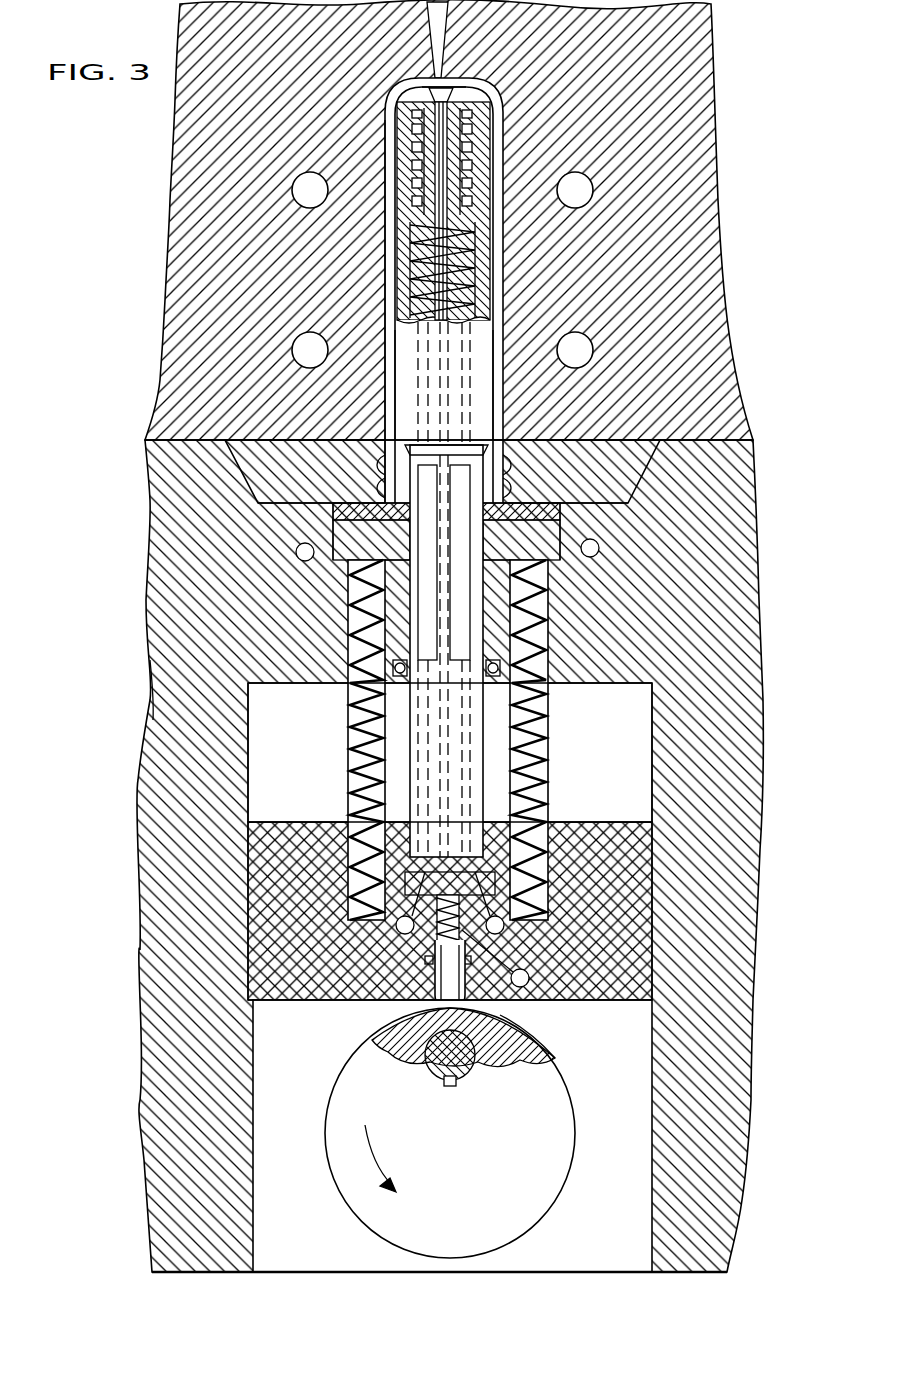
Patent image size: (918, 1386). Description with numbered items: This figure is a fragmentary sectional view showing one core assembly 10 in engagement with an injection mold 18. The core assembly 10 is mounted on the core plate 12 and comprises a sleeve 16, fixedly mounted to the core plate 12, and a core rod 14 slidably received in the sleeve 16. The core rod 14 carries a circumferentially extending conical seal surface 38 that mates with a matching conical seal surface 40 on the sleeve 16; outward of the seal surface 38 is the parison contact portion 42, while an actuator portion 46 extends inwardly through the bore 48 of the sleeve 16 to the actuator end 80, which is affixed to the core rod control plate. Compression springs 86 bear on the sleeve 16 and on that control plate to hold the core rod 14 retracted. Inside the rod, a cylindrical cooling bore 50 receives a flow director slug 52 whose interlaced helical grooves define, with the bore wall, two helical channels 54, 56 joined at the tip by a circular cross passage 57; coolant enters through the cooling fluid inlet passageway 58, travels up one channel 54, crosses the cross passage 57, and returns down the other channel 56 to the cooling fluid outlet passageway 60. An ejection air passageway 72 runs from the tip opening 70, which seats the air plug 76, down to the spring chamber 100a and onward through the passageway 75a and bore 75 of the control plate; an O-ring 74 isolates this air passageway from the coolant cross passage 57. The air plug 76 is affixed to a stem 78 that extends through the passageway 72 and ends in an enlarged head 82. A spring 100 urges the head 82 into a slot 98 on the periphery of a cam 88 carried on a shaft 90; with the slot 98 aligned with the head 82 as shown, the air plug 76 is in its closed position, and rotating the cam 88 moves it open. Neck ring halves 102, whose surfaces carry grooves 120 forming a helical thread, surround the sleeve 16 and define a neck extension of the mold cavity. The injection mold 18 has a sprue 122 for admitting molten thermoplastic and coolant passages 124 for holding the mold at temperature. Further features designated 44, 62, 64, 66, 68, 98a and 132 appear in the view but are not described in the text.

The core assembly 10 is at (180, 604).
The core plate 12 is at (145, 692).
The core rod 14 is at (392, 377).
The sleeve 16 is at (330, 470).
The injection mold 18 is at (182, 357).
The conical seal surface 38 is at (400, 395).
The conical seal surface 40 is at (385, 430).
The parison contact portion 42 is at (400, 330).
The nozzle cap 44 is at (416, 68).
The actuator portion 46 is at (392, 745).
The bore 48 is at (405, 547).
The cooling bore 50 is at (472, 240).
The flow director slug 52 is at (470, 134).
The helical channel 54 is at (474, 222).
The helical channel 56 is at (383, 145).
The cross passage 57 is at (397, 112).
The cooling fluid inlet passageway 58 is at (504, 926).
The cooling fluid outlet passageway 60 is at (397, 922).
The seal 62 is at (483, 492).
The passage 64 is at (312, 560).
The flange edge 66 is at (333, 512).
The guide sleeve 68 is at (494, 447).
The tip opening 70 is at (455, 90).
The ejection air passageway 72 is at (472, 166).
The O-ring 74 is at (449, 108).
The bore 75 is at (530, 982).
The passageway 75a is at (522, 952).
The air plug 76 is at (463, 85).
The stem 78 is at (415, 205).
The actuator end 80 is at (484, 805).
The enlarged head 82 is at (458, 990).
The compression springs 86 is at (549, 746).
The cam 88 is at (566, 1112).
The shaft 90 is at (463, 1076).
The slot 98 is at (390, 1030).
The cam lobe surface 98a is at (556, 1046).
The spring 100 is at (436, 926).
The spring chamber 100a is at (428, 963).
The neck ring halves 102 is at (655, 462).
The grooves 120 is at (378, 480).
The sprue 122 is at (446, 38).
The coolant passages 124 is at (592, 188).
The shoulder 132 is at (506, 450).